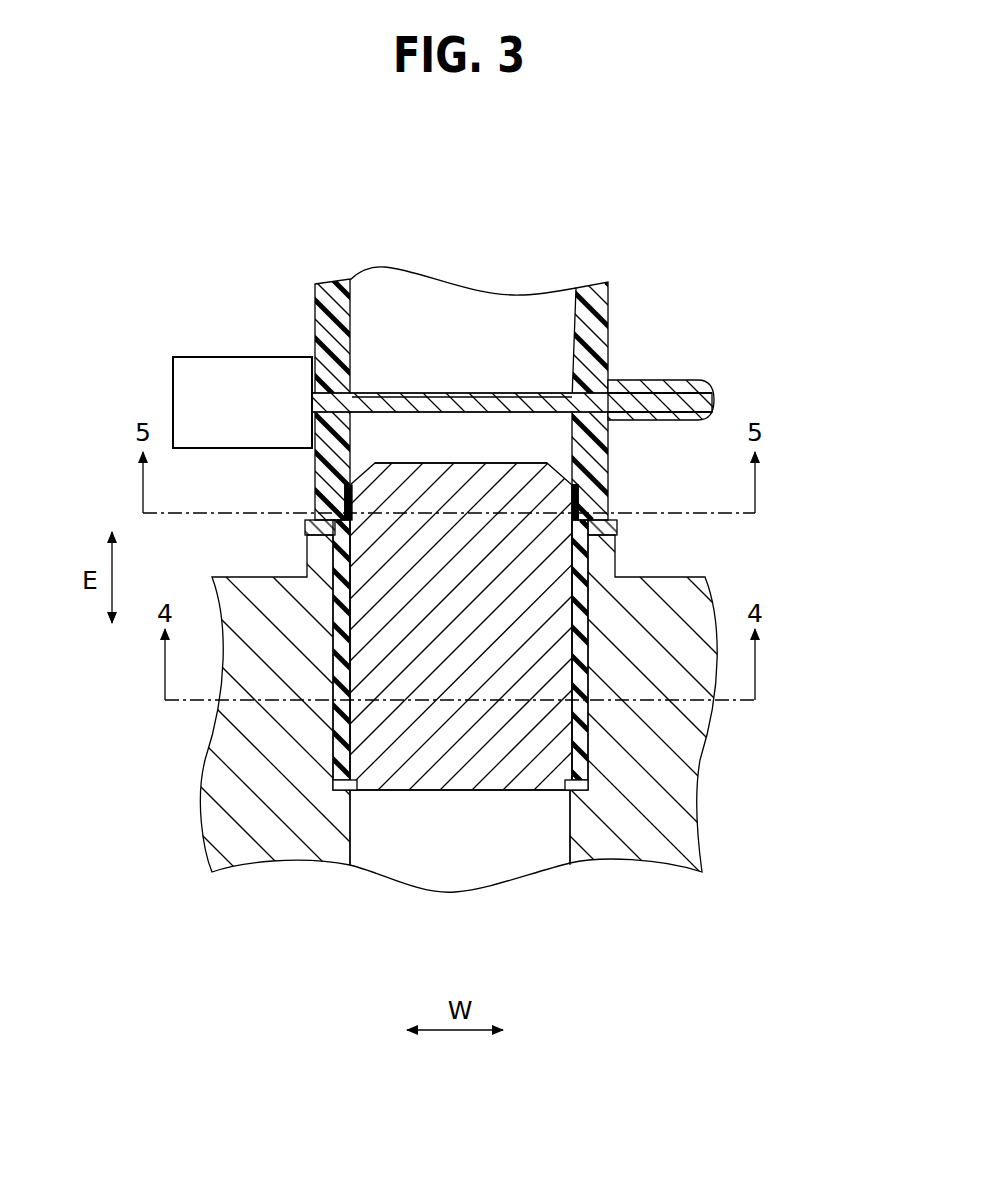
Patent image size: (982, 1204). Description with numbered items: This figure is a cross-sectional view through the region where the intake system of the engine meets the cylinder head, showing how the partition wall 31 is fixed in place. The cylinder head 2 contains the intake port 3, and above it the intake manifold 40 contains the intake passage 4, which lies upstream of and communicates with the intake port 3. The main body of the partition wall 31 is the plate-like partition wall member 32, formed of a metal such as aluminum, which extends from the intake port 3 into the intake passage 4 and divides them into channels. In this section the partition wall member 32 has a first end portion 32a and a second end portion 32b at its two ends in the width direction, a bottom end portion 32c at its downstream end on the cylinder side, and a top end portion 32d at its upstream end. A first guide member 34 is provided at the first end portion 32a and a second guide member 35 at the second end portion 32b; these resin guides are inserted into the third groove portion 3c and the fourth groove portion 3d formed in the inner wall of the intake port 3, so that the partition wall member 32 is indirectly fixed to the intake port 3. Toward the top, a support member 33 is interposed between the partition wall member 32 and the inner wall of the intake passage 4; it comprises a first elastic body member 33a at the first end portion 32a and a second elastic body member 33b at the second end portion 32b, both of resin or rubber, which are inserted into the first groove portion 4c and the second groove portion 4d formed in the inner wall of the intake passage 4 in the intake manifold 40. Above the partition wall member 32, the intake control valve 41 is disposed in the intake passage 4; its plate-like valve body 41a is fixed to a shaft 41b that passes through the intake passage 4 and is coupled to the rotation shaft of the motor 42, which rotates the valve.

The cylinder head 2 is at (700, 802).
The intake port 3 is at (458, 890).
The third groove portion 3c is at (350, 793).
The fourth groove portion 3d is at (570, 794).
The intake passage 4 is at (455, 372).
The first groove portion 4c is at (352, 487).
The second groove portion 4d is at (578, 487).
The partition wall 31 is at (463, 589).
The partition wall member 32 is at (432, 478).
The first end portion 32a is at (347, 582).
The second end portion 32b is at (580, 582).
The bottom end portion 32c is at (522, 795).
The top end portion 32d is at (503, 463).
The support member 33 is at (568, 525).
The first elastic body member 33a is at (347, 510).
The second elastic body member 33b is at (585, 510).
The first guide member 34 is at (338, 757).
The second guide member 35 is at (583, 757).
The intake manifold 40 is at (608, 310).
The intake control valve 41 is at (529, 322).
The valve body 41a is at (530, 395).
The shaft 41b is at (712, 392).
The motor 42 is at (243, 357).